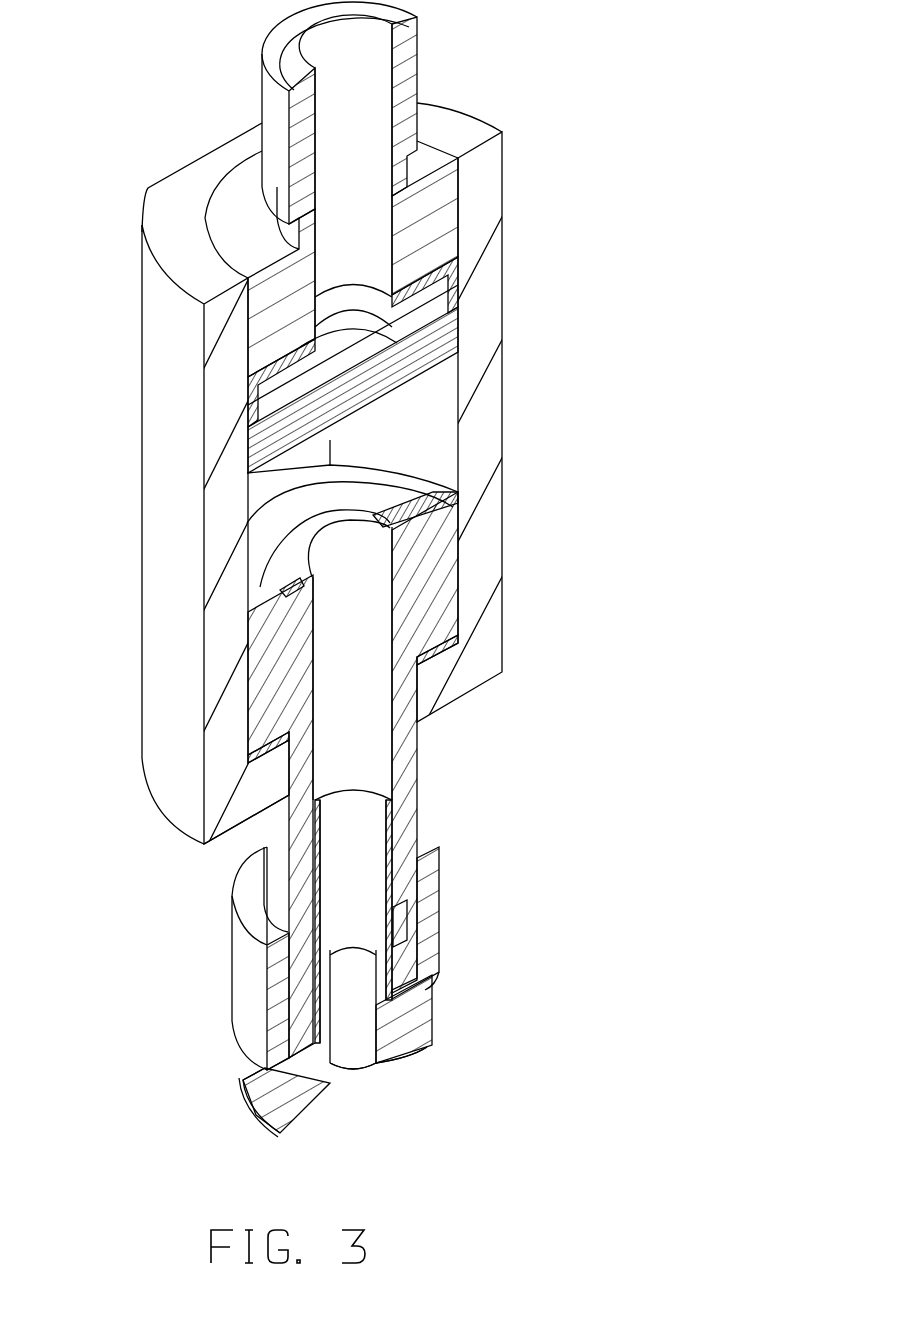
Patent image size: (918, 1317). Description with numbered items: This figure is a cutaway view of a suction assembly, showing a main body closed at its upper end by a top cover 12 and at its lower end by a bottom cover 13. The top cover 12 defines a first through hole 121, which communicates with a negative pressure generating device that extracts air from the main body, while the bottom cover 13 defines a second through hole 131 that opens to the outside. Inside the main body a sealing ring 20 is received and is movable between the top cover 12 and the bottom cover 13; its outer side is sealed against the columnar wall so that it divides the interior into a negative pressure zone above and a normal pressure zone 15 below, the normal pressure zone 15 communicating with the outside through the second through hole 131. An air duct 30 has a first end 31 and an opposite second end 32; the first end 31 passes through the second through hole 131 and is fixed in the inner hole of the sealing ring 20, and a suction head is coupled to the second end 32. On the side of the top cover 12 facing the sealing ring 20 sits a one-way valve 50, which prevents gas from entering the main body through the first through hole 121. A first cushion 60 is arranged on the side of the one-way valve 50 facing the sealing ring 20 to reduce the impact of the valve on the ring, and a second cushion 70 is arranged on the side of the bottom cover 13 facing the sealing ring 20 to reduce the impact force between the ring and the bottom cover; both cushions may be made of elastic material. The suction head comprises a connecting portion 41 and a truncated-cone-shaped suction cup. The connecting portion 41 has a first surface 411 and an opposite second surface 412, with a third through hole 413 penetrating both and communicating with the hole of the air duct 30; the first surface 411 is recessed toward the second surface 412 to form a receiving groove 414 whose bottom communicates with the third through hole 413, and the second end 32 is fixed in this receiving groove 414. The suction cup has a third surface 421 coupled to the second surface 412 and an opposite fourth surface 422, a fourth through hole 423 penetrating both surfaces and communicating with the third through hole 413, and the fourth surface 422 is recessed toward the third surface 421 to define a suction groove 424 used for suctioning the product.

The top cover 12 is at (415, 189).
The first through hole 121 is at (354, 214).
The bottom cover 13 is at (445, 680).
The second through hole 131 is at (284, 780).
The normal pressure zone 15 is at (460, 648).
The sealing ring 20 is at (415, 741).
The first end 31 is at (372, 515).
The air duct 30 is at (345, 924).
The second end 32 is at (315, 943).
The connecting portion 41 is at (338, 958).
The first surface 411 is at (246, 906).
The second surface 412 is at (426, 1007).
The third through hole 413 is at (366, 974).
The receiving groove 414 is at (410, 923).
The third surface 421 is at (300, 1070).
The fourth surface 422 is at (279, 1140).
The fourth through hole 423 is at (352, 1068).
The suction groove 424 is at (406, 1066).
The one-way valve 50 is at (440, 300).
The first cushion 60 is at (435, 345).
The second cushion 70 is at (287, 750).